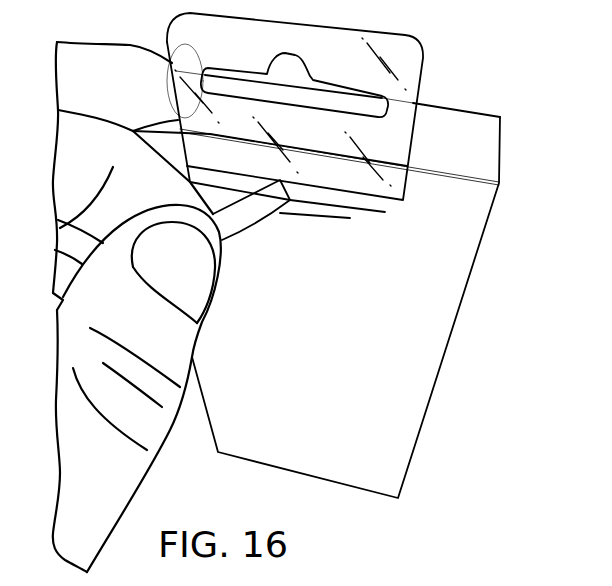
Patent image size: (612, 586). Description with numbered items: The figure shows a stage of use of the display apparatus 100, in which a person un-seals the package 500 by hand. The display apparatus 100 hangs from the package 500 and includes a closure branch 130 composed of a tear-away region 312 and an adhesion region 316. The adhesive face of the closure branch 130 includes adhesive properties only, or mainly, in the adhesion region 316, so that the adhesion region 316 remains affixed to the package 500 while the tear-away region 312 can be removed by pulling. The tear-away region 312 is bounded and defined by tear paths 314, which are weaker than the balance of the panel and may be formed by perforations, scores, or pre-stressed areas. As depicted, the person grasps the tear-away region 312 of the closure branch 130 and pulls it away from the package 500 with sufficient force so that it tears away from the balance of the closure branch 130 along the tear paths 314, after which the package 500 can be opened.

The display apparatus 100 is at (431, 47).
The closure branch 130 is at (372, 214).
The tear-away region 312 is at (247, 223).
The tear paths 314 is at (327, 187).
The adhesion region 316 is at (385, 209).
The package 500 is at (433, 449).